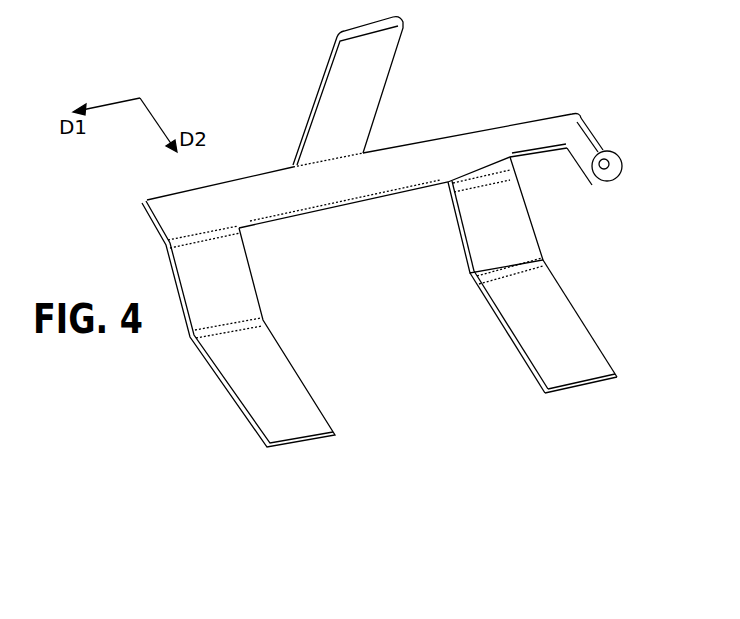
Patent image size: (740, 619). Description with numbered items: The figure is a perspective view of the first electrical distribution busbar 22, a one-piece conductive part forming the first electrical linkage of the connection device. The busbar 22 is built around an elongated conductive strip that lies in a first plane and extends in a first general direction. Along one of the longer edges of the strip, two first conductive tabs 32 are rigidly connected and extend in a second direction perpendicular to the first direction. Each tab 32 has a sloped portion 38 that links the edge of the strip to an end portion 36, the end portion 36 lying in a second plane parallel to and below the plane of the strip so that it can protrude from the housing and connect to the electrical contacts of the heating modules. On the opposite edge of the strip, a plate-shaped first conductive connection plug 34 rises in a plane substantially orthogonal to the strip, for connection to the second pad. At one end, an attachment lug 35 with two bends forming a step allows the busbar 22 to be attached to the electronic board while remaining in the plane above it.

The first electrical distribution busbar 22 is at (407, 260).
The first conductive tabs 32 is at (407, 302).
The first conductive connection plug 34 is at (381, 45).
The attachment lug 35 is at (614, 153).
The end portion 36 is at (592, 368).
The sloped portion 38 is at (513, 238).